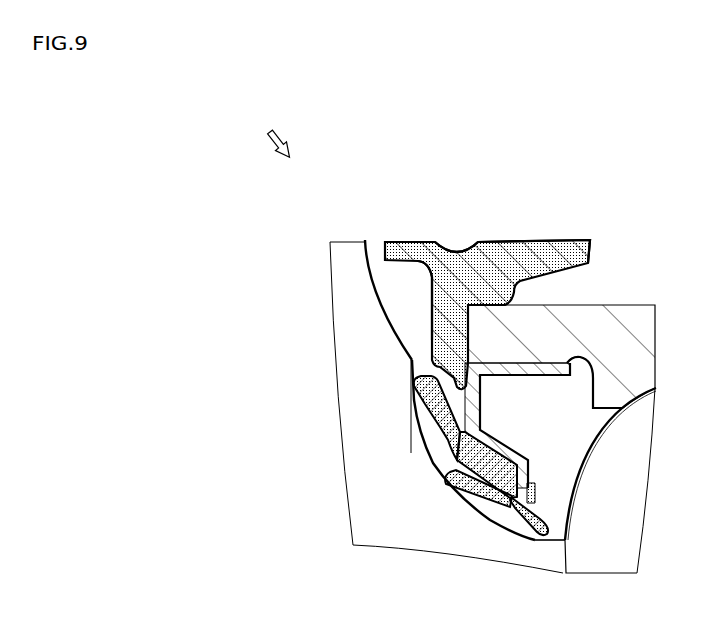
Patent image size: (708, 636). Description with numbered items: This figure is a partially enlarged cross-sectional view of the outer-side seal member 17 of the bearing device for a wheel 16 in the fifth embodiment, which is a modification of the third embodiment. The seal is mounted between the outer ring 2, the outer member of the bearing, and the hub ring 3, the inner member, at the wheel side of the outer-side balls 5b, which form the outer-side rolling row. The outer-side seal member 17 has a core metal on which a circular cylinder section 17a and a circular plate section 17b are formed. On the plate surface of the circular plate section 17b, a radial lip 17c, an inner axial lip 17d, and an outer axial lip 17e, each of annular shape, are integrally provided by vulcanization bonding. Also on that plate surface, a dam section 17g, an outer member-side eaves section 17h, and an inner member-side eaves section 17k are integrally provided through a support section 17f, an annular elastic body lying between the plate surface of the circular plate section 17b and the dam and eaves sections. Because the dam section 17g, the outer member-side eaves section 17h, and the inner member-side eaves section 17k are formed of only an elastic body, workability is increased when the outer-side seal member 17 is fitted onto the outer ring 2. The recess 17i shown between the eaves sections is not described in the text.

The outer ring 2 is at (655, 345).
The hub ring 3 is at (375, 533).
The outer-side balls 5b is at (630, 537).
The bearing device for a wheel 16 is at (266, 135).
The outer-side seal member 17 is at (381, 240).
The circular cylinder section 17a is at (463, 368).
The circular plate section 17b is at (420, 451).
The radial lip 17c is at (530, 537).
The inner axial lip 17d is at (446, 478).
The outer axial lip 17e is at (414, 387).
The support section 17f is at (432, 323).
The dam section 17g is at (432, 273).
The outer member-side eaves section 17h is at (542, 238).
The recess of elastic body 17i is at (463, 238).
The inner member-side eaves section 17k is at (403, 238).